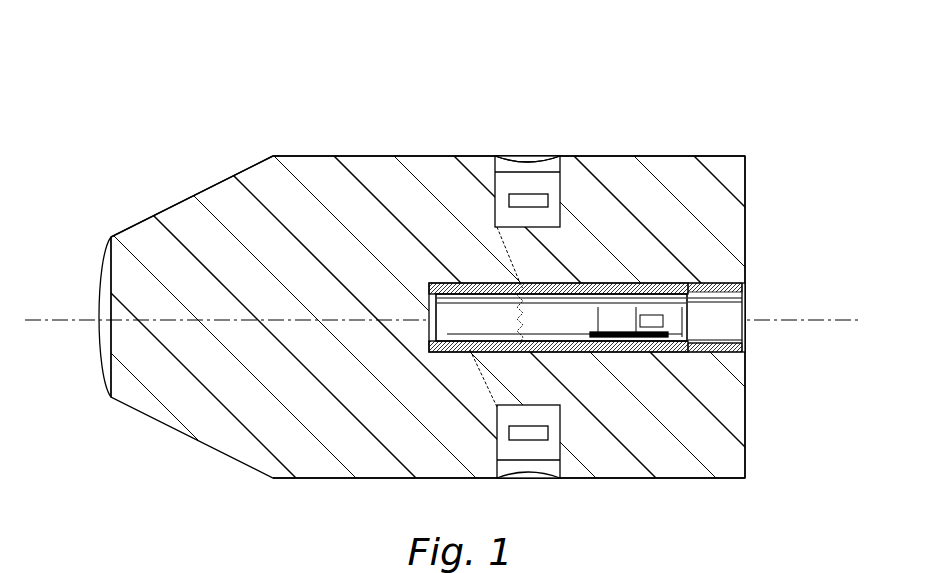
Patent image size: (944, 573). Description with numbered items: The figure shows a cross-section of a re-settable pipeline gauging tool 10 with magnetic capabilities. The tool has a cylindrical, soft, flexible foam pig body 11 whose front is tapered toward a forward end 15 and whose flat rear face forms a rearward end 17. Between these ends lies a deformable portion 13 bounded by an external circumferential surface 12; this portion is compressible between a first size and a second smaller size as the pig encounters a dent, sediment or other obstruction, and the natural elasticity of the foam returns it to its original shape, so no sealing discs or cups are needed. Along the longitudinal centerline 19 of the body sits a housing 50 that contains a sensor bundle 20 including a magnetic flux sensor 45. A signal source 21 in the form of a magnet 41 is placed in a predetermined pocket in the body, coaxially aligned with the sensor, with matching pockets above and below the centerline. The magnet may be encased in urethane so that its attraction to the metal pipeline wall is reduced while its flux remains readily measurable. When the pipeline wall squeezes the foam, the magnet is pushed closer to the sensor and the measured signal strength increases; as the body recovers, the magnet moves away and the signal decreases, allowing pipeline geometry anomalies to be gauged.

The re-settable pipeline gauging tool 10 is at (215, 170).
The foam pig body 11 is at (653, 155).
The external circumferential surface 12 is at (312, 480).
The deformable portion 13 is at (388, 195).
The forward end 15 is at (112, 400).
The rearward end 17 is at (748, 462).
The longitudinal centerline 19 is at (776, 320).
The sensor bundle 20 is at (592, 376).
The signal source 21 is at (517, 125).
The magnet 41 is at (528, 194).
The magnetic flux sensor 45 is at (470, 440).
The housing 50 is at (661, 278).